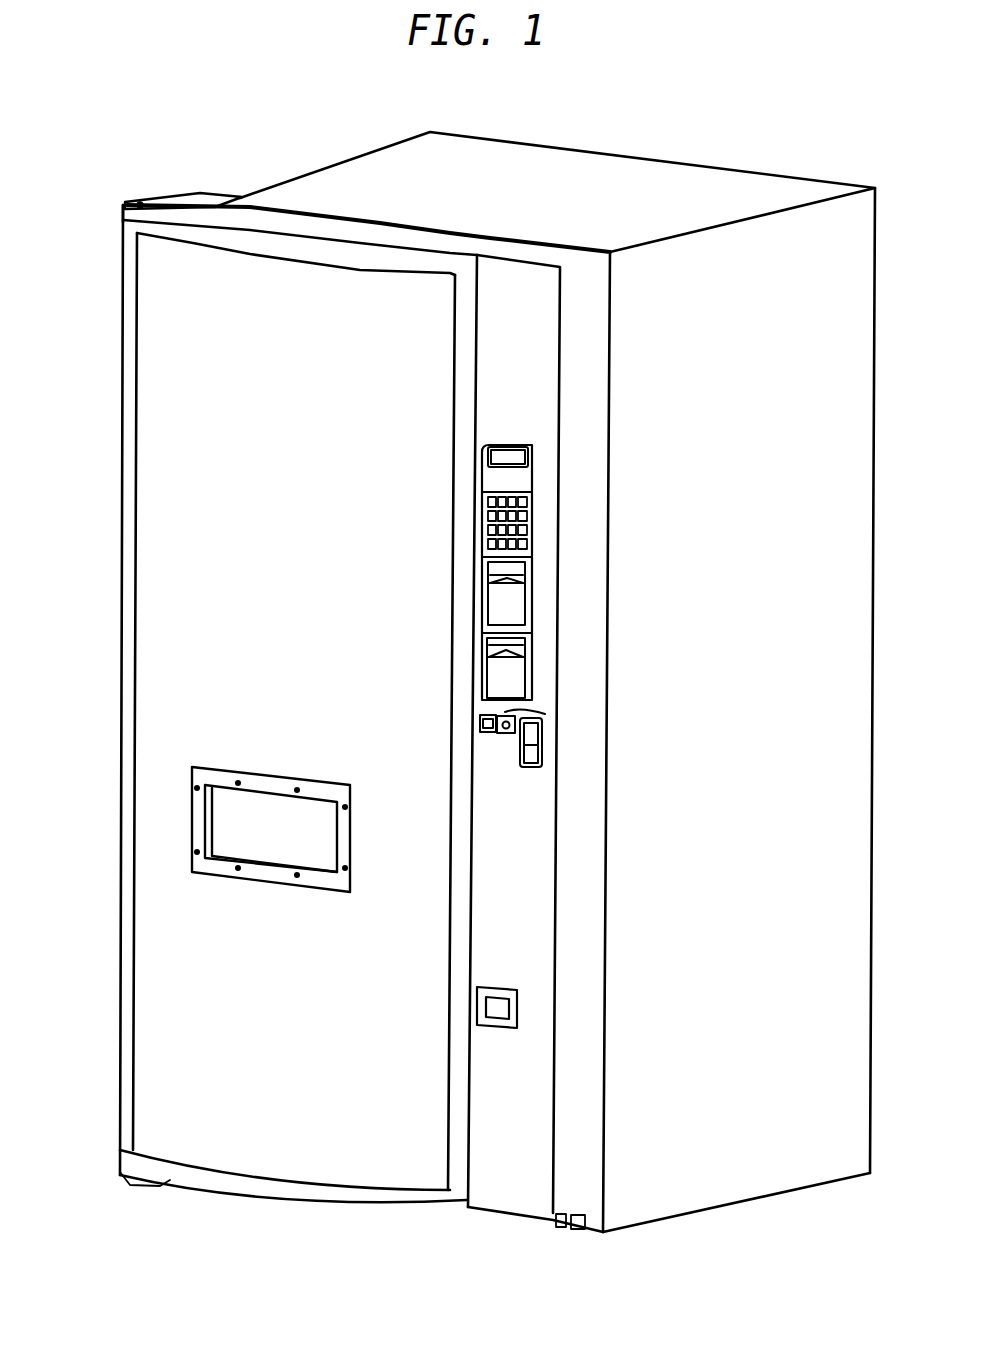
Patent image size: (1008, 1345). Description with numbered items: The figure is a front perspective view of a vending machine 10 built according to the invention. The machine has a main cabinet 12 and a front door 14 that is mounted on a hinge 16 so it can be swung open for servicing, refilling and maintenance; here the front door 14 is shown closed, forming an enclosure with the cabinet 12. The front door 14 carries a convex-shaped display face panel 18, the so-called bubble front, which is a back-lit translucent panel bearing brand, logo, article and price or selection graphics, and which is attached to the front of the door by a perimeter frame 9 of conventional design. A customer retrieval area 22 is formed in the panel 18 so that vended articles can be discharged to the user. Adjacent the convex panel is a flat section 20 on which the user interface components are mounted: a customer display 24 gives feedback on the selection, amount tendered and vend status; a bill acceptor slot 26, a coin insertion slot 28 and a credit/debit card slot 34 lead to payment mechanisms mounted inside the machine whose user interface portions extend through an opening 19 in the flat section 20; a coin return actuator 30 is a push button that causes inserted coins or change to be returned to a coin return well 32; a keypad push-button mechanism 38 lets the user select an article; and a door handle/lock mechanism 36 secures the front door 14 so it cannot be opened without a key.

The vending machine 10 is at (497, 638).
The main cabinet 12 is at (830, 183).
The front door 14 is at (254, 665).
The hinge 16 is at (168, 190).
The convex-shaped display face panel 18 is at (243, 711).
The perimeter frame 9 is at (123, 213).
The flat section 20 is at (588, 734).
The opening 19 is at (482, 442).
The customer retrieval area 22 is at (245, 827).
The customer display 24 is at (525, 463).
The keypad push-button mechanism 38 is at (530, 520).
The bill acceptor slot 26 is at (528, 580).
The credit/debit card slot 34 is at (530, 650).
The coin insertion slot 28 is at (510, 715).
The coin return actuator 30 is at (525, 730).
The door handle/lock mechanism 36 is at (545, 752).
The coin return well 32 is at (515, 1010).